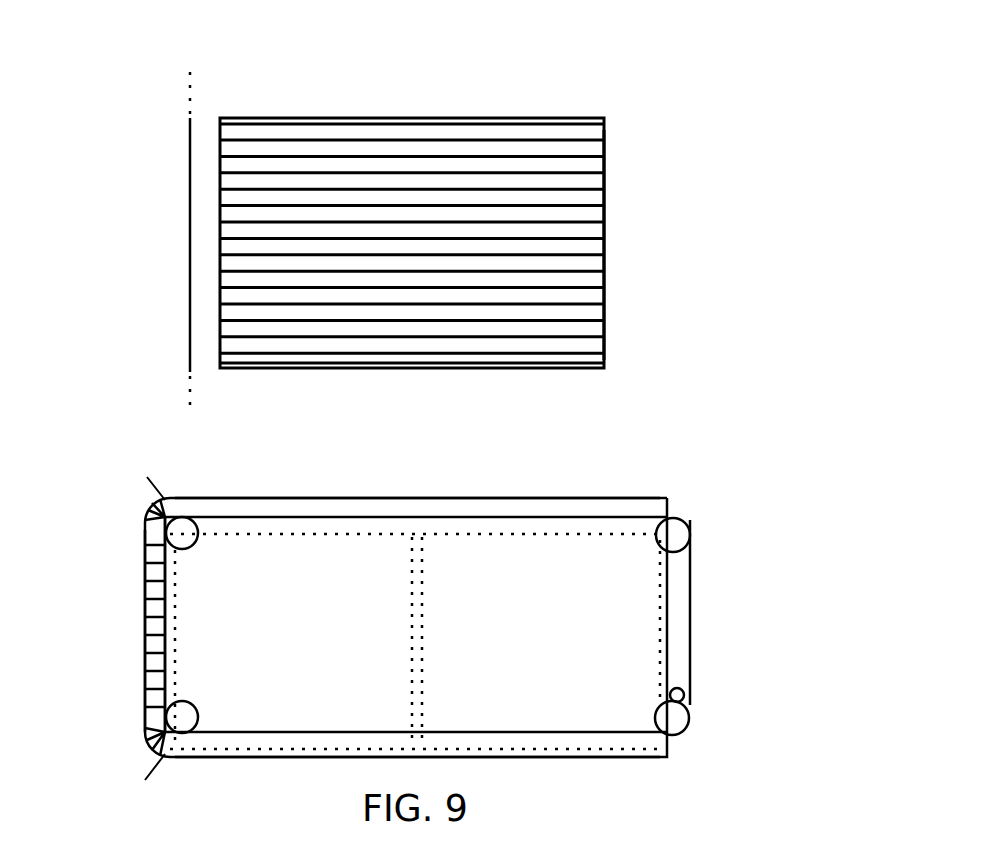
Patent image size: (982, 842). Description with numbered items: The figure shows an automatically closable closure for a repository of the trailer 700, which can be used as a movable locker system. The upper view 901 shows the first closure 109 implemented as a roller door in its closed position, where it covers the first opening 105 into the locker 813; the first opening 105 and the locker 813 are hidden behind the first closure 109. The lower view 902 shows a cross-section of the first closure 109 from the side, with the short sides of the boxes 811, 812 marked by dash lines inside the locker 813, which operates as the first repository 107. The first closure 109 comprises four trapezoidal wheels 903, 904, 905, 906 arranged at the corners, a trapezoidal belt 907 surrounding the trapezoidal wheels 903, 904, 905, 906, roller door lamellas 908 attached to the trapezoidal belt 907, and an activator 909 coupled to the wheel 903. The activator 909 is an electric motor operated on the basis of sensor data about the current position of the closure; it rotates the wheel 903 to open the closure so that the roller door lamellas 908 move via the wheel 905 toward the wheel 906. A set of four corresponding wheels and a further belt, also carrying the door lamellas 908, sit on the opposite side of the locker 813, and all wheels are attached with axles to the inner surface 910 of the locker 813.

The view 901 is at (411, 84).
The first closure 109 is at (606, 216).
The trailer 700 is at (203, 222).
The view 902 is at (444, 620).
The inner surface 910 is at (289, 497).
The trapezoidal wheel 906 is at (674, 532).
The trapezoidal wheel 905 is at (183, 541).
The trapezoidal wheel 904 is at (186, 715).
The trapezoidal wheel 903 is at (676, 720).
The activator 909 is at (685, 693).
The box 811 is at (300, 536).
The box 812 is at (547, 536).
The locker 813 is at (620, 600).
The first repository 107 is at (733, 612).
The trapezoidal belt 907 is at (540, 730).
The first opening 105 is at (165, 652).
The roller door lamellas 908 is at (145, 690).